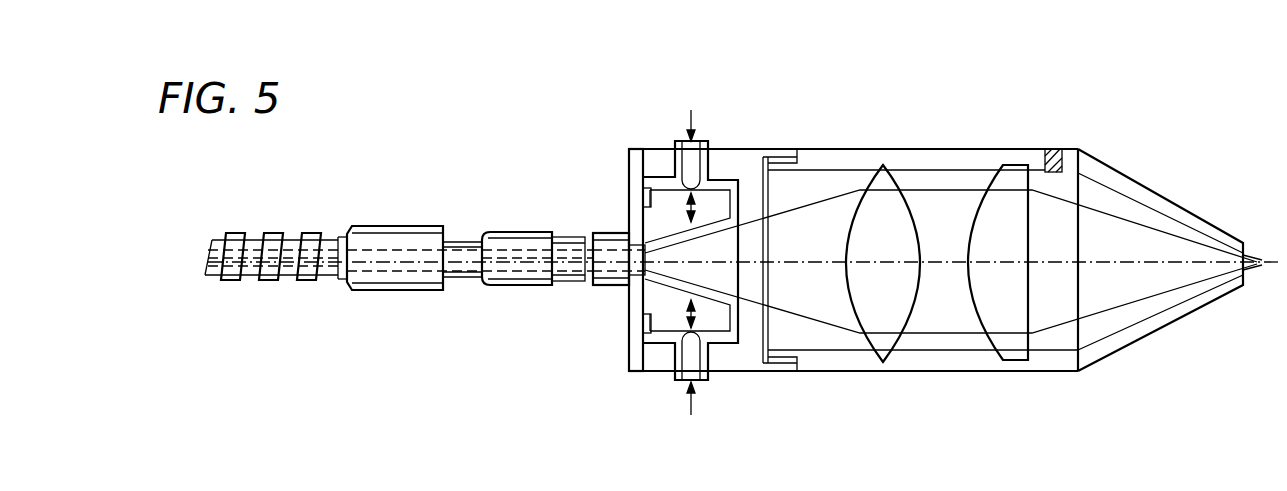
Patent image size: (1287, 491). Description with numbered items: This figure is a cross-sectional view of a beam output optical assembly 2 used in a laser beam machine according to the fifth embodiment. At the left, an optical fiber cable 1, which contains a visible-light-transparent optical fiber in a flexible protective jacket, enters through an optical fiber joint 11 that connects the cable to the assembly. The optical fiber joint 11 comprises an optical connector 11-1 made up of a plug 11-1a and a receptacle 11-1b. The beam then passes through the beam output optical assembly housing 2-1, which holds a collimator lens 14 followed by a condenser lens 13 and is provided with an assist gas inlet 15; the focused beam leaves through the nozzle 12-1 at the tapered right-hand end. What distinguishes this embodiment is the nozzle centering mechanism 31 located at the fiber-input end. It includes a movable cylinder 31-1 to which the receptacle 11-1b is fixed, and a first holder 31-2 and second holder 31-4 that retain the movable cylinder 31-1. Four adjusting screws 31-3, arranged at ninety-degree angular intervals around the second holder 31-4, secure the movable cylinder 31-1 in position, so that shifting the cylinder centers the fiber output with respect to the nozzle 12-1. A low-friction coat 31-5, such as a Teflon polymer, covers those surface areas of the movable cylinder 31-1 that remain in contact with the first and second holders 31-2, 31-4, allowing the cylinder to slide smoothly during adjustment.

The optical fiber cable 1 is at (288, 272).
The optical fiber joint 11 is at (415, 98).
The optical connector 11-1 is at (422, 225).
The plug 11-1a is at (498, 233).
The receptacle 11-1b is at (637, 230).
The nozzle centering mechanism 31 is at (612, 110).
The movable cylinder 31-1 is at (668, 316).
The first holder 31-2 is at (638, 158).
The adjusting screws 31-3 is at (688, 148).
The second holder 31-4 is at (727, 165).
The low-friction coat 31-5 is at (670, 172).
The beam output optical assembly 2 is at (1203, 58).
The beam output optical assembly housing 2-1 is at (735, 360).
The collimator lens 14 is at (878, 200).
The condenser lens 13 is at (1005, 200).
The assist gas inlet 15 is at (1052, 147).
The nozzle 12-1 is at (1153, 202).